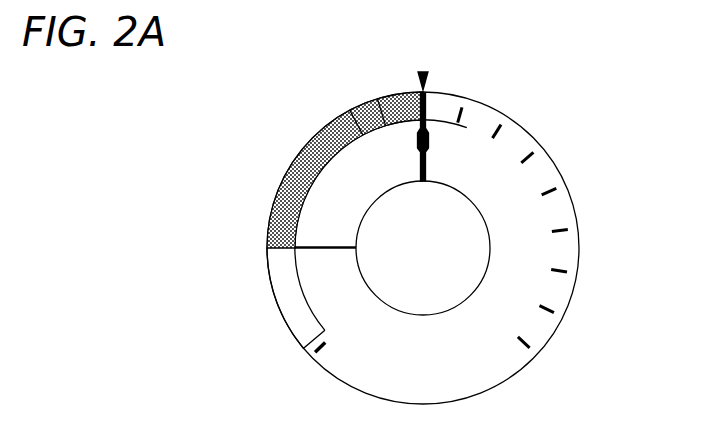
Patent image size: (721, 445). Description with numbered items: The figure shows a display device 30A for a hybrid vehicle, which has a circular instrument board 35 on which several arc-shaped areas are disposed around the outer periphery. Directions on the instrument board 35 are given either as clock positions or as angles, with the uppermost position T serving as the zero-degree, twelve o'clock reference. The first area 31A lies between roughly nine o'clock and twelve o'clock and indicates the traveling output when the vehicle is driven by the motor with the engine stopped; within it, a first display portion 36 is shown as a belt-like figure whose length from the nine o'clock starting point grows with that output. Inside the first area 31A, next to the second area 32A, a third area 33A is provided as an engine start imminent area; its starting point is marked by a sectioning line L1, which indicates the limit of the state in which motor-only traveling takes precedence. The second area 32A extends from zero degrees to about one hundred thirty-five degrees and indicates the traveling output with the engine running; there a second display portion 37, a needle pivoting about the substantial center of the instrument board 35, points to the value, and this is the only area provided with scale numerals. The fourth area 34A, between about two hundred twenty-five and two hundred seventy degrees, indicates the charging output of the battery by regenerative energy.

The display device 30A is at (520, 388).
The first area 31A is at (368, 52).
The second area 32A is at (545, 360).
The third area 33A is at (416, 75).
The fourth area 34A is at (262, 250).
The instrument board 35 is at (353, 366).
The first display portion 36 is at (283, 210).
The second display portion 37 is at (428, 158).
The uppermost position T is at (425, 70).
The sectioning line L1 is at (328, 121).